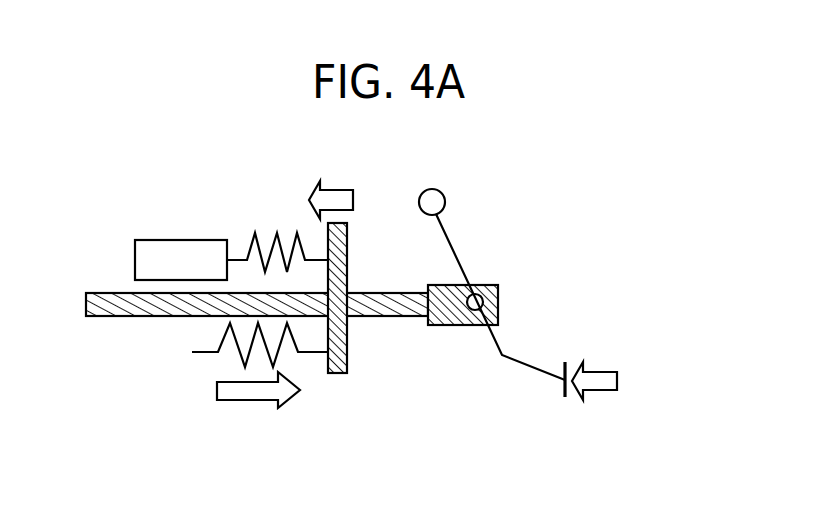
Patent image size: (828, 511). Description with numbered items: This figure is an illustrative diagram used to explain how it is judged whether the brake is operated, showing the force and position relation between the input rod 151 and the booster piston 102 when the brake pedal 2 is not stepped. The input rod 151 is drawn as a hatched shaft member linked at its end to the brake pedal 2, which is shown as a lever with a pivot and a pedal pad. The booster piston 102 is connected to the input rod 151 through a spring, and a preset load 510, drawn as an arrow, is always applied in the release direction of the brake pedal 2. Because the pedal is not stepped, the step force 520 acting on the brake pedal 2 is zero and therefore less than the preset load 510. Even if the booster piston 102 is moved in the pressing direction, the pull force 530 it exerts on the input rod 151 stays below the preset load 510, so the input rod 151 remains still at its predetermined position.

The booster piston 102 is at (180, 240).
The input rod 151 is at (130, 317).
The brake pedal 2 is at (527, 365).
The preset load 510 is at (248, 400).
The step force 520 is at (602, 372).
The pull force 530 is at (342, 190).